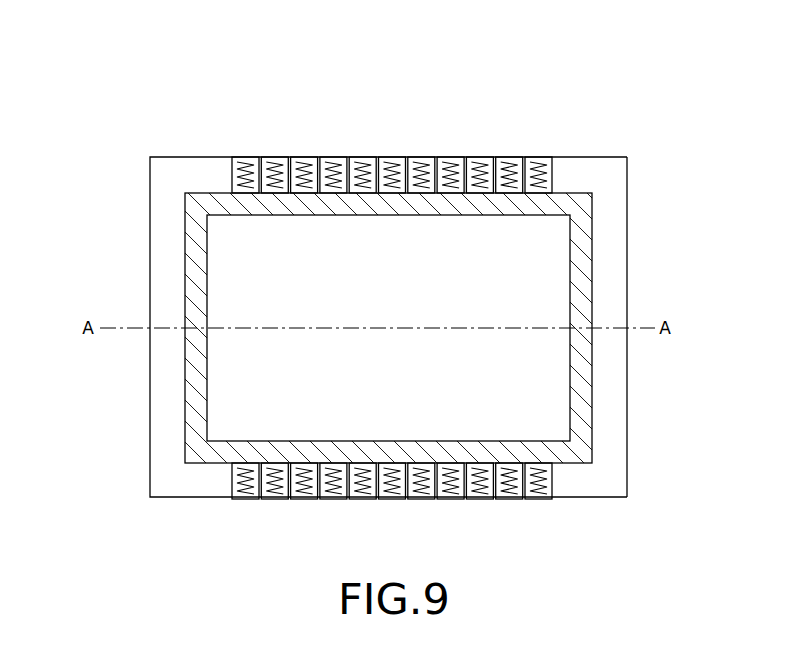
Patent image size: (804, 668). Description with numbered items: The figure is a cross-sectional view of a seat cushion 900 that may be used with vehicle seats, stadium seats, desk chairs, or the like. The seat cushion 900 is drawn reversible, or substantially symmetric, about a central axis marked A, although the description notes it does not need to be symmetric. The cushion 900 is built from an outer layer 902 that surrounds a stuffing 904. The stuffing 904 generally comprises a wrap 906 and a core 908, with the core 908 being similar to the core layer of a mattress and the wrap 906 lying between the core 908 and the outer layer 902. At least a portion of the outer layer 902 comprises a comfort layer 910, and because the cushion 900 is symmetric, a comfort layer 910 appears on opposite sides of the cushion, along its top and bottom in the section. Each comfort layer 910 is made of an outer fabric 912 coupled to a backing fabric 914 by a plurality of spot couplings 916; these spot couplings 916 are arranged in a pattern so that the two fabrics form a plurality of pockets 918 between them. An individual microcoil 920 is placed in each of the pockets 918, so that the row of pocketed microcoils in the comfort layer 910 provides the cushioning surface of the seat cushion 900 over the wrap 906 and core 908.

The seat cushion 900 is at (135, 83).
The outer layer 902 is at (615, 385).
The stuffing 904 is at (660, 275).
The wrap 906 is at (450, 441).
The core 908 is at (253, 412).
The comfort layer 910 is at (412, 157).
The outer fabric 912 is at (340, 157).
The backing fabric 914 is at (301, 193).
The spot couplings 916 is at (552, 157).
The pockets 918 is at (280, 157).
The microcoil 920 is at (510, 157).